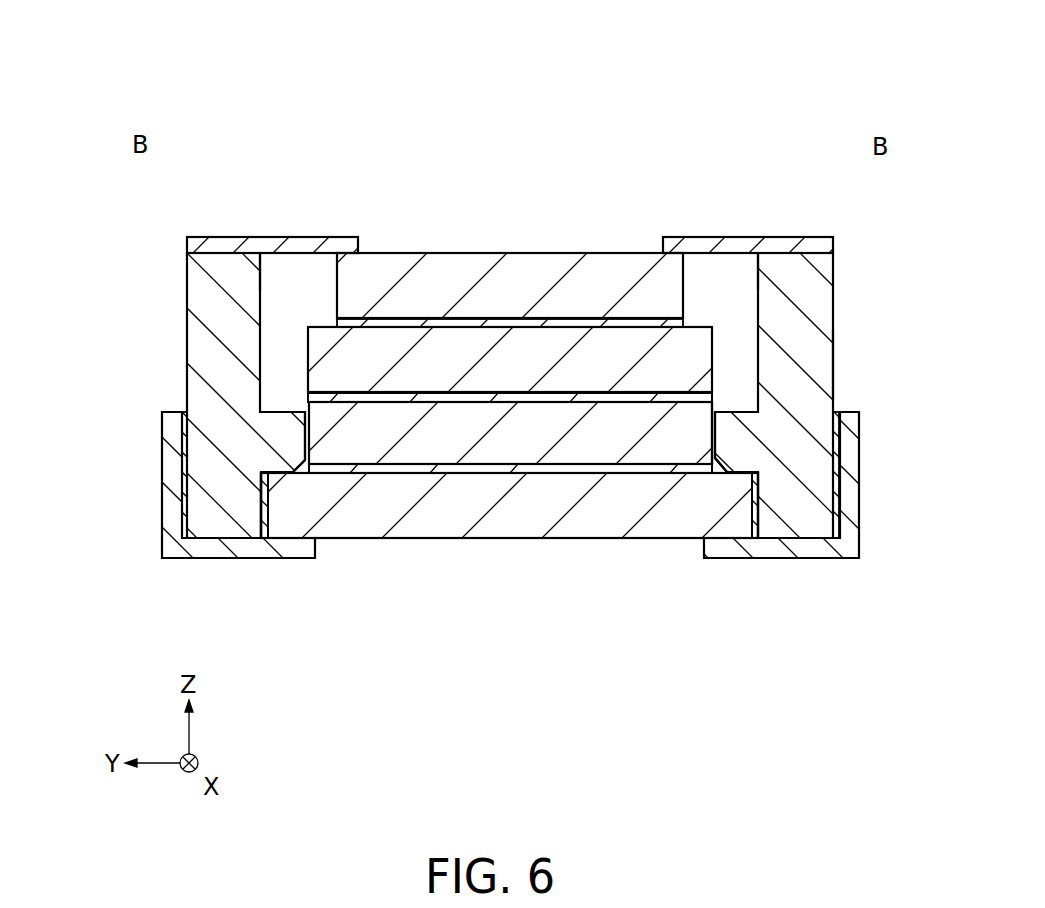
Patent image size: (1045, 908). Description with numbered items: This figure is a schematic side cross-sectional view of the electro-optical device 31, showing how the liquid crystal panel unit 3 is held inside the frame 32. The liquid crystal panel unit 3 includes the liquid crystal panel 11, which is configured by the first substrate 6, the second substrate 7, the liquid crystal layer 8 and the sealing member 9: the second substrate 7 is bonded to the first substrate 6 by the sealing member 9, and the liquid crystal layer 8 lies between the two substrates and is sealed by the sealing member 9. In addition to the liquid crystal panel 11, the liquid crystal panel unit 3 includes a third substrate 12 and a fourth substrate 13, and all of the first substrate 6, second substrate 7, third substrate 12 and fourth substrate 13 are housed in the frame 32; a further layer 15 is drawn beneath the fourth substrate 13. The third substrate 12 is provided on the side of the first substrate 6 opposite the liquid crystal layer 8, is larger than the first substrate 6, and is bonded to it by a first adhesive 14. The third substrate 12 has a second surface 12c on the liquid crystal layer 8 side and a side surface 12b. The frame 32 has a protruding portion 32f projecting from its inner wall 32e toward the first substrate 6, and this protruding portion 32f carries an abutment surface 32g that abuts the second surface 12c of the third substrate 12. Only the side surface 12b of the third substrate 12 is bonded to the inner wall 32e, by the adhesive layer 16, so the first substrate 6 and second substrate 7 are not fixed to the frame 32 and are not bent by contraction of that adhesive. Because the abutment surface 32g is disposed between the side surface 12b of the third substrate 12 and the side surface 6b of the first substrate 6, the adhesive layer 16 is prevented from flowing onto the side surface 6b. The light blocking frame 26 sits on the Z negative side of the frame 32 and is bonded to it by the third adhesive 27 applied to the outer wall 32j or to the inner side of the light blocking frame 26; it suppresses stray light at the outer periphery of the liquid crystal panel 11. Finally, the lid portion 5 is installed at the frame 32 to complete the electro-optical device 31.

The liquid crystal panel unit 3 is at (595, 128).
The electro-optical device 31 is at (832, 72).
The frame 32 is at (223, 270).
The inner wall 32e is at (265, 277).
The protruding portion 32f is at (293, 458).
The abutment surface 32g is at (277, 475).
The outer wall 32j is at (835, 365).
The lid portion 5 is at (337, 247).
The fourth substrate 13 is at (497, 267).
The bonding layer 15 is at (640, 320).
The liquid crystal panel 11 is at (93, 322).
The second substrate 7 is at (313, 338).
The liquid crystal layer 8 is at (373, 392).
The sealing member 9 is at (313, 400).
The first substrate 6 is at (317, 427).
The side surface of the first substrate 6b is at (714, 405).
The first adhesive 14 is at (612, 462).
The third substrate 12 is at (478, 522).
The side surface of the third substrate 12b is at (263, 482).
The second surface 12c is at (618, 474).
The adhesive layer 16 is at (263, 508).
The third adhesive 27 is at (183, 525).
The light blocking frame 26 is at (223, 548).